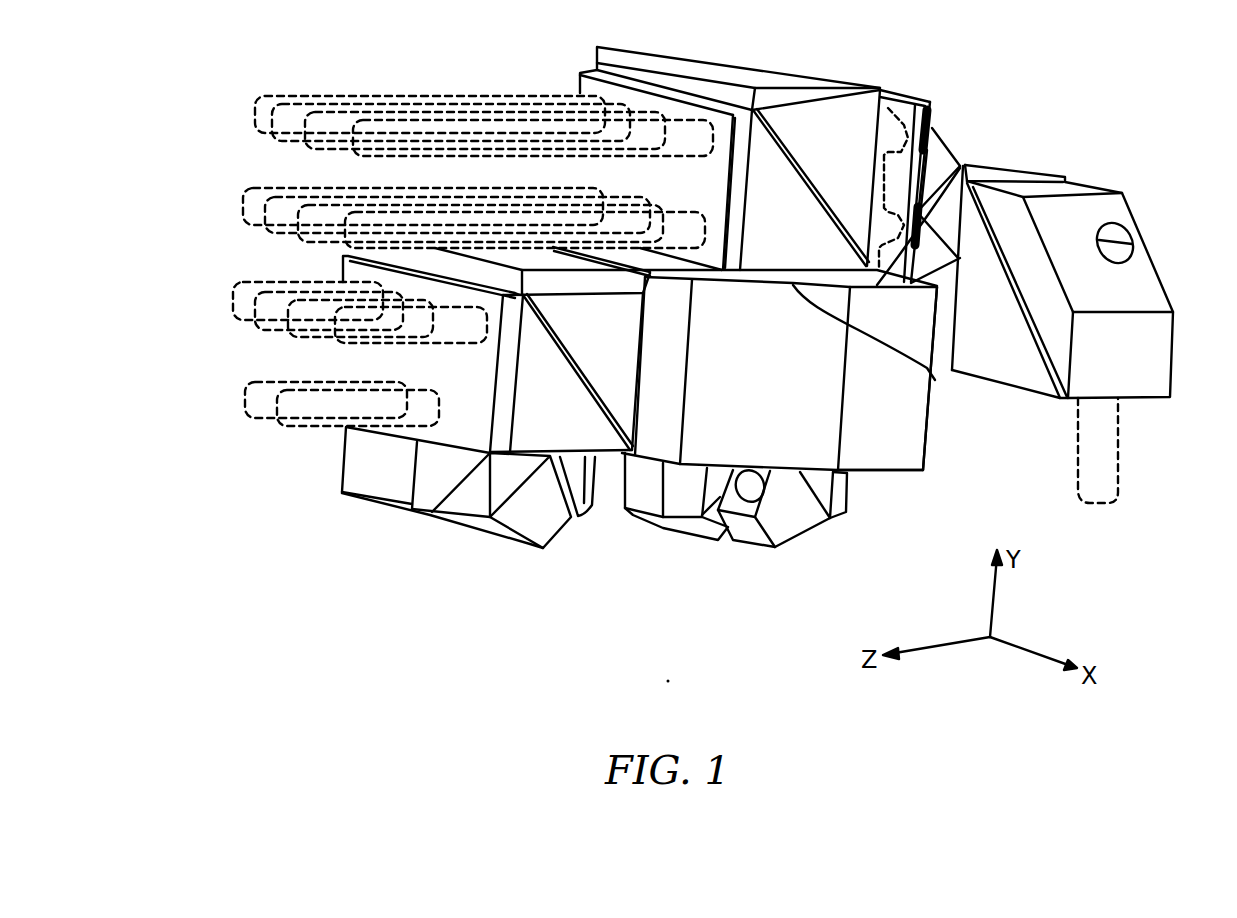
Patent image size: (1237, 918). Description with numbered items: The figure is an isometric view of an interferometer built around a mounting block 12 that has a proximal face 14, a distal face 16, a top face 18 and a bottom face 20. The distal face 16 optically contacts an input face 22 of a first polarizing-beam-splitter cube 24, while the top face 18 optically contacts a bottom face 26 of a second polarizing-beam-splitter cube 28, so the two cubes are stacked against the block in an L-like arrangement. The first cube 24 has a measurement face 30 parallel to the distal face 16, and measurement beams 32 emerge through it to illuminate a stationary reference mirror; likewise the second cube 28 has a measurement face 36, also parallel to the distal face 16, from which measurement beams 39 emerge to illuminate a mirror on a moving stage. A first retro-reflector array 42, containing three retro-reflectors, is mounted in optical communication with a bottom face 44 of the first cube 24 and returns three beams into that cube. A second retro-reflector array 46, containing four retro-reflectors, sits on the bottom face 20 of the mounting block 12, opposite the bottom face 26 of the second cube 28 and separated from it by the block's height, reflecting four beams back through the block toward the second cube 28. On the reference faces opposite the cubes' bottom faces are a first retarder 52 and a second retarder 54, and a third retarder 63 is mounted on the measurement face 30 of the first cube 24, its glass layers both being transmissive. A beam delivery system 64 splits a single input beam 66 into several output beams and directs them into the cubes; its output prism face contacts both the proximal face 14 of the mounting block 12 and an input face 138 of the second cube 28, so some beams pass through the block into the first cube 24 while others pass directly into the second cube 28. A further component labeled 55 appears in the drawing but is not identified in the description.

The mounting block 12 is at (778, 388).
The proximal face 14 is at (925, 452).
The distal face 16 is at (676, 407).
The top face 18 is at (958, 166).
The bottom face 20 is at (883, 473).
The input face 22 is at (668, 532).
The first polarizing-beam-splitter cube 24 is at (613, 346).
The bottom face 26 is at (930, 370).
The second polarizing-beam-splitter cube 28 is at (852, 168).
The measurement face 30 is at (335, 328).
The measurement beams 32 is at (236, 300).
The measurement face 36 is at (567, 155).
The measurement beams 39 is at (258, 112).
The first retro-reflector array 42 is at (508, 548).
The bottom face 44 is at (597, 500).
The second retro-reflector array 46 is at (780, 548).
The first retarder 52 is at (650, 273).
The second retarder 54 is at (597, 48).
The side frame member 55 is at (737, 180).
The third retarder 63 is at (429, 518).
The beam delivery system 64 is at (1122, 118).
The input beam 66 is at (1118, 472).
The input face 138 is at (888, 107).